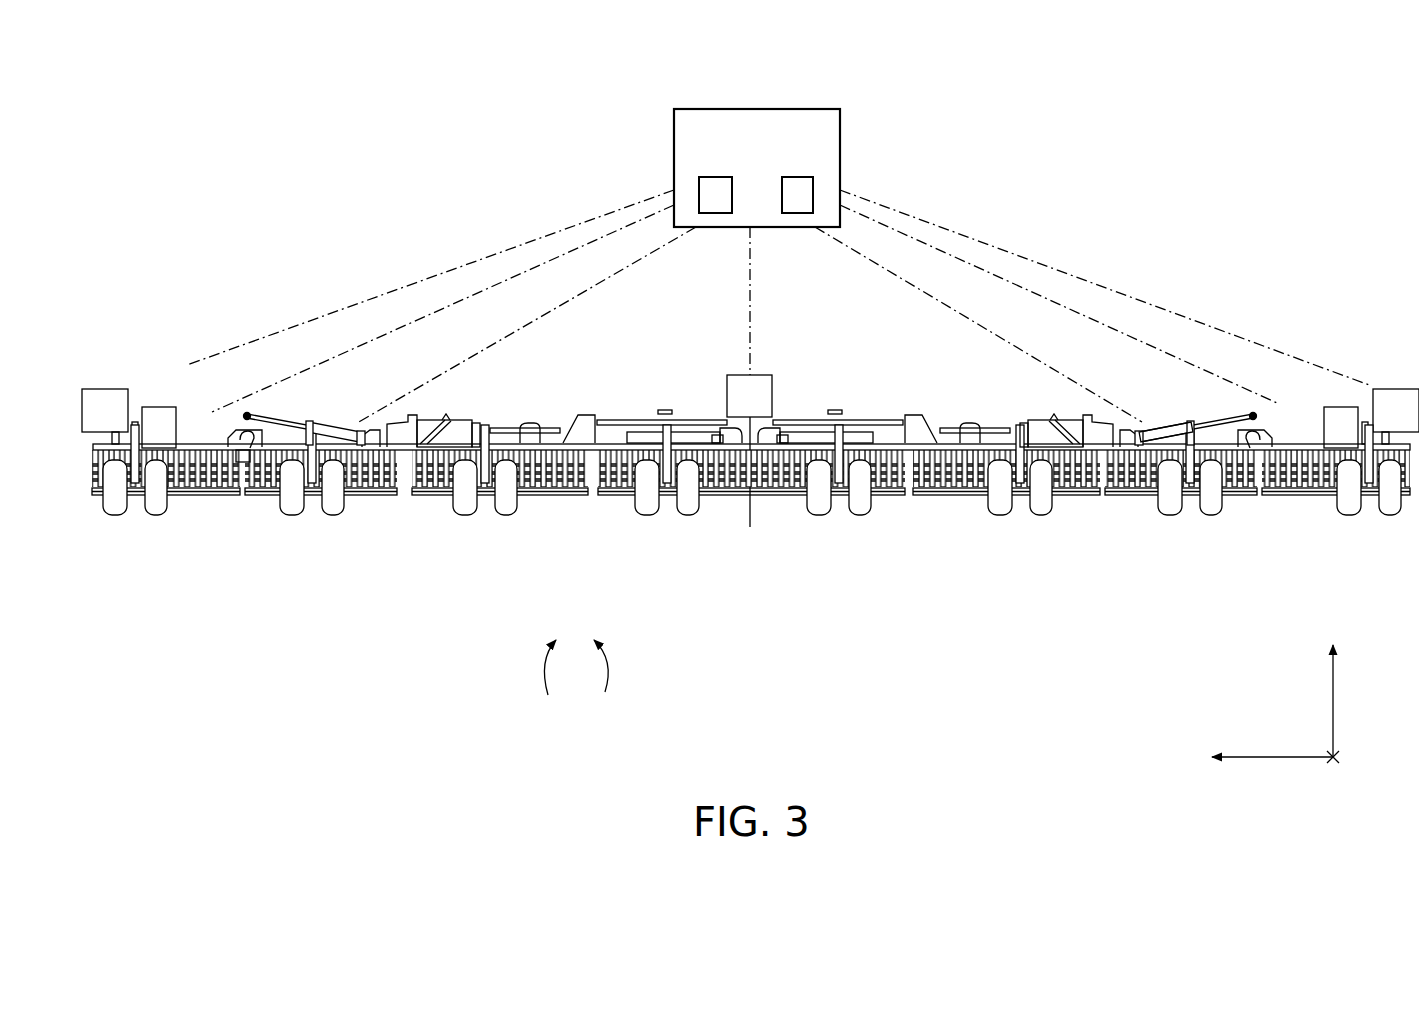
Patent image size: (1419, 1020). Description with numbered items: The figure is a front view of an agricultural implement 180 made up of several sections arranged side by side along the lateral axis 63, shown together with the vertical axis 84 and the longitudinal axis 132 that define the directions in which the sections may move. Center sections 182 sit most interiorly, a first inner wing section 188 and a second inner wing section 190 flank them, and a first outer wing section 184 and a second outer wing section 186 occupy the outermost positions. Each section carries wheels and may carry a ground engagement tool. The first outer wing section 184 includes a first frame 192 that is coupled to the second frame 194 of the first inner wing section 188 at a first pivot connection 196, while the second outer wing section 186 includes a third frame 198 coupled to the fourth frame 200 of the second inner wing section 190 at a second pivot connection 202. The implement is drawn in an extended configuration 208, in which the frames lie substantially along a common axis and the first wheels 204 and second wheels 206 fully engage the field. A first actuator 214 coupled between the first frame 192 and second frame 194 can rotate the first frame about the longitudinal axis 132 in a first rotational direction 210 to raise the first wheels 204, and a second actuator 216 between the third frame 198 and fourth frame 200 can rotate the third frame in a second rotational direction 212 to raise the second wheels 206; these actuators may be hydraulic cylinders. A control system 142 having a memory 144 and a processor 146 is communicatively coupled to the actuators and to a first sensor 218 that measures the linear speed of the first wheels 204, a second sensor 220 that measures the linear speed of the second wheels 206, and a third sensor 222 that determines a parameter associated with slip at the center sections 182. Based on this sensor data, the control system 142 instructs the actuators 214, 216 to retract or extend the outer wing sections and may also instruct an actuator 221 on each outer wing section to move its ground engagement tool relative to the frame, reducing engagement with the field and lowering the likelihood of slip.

The lateral axis 63 is at (1291, 757).
The vertical axis 84 is at (1332, 680).
The longitudinal axis 132 is at (1357, 746).
The control system 142 is at (674, 140).
The memory 144 is at (699, 192).
The processor 146 is at (813, 192).
The agricultural implement 180 is at (970, 168).
The center sections 182 is at (808, 548).
The first outer wing section 184 is at (182, 502).
The second outer wing section 186 is at (1320, 502).
The first inner wing section 188 is at (363, 502).
The second inner wing section 190 is at (1137, 502).
The first frame 192 is at (224, 454).
The second frame 194 is at (270, 444).
The first pivot connection 196 is at (260, 431).
The third frame 198 is at (1283, 441).
The fourth frame 200 is at (1197, 425).
The second pivot connection 202 is at (1230, 428).
The first wheels 204 is at (140, 508).
The second wheels 206 is at (1380, 508).
The extended configuration 208 is at (1148, 326).
The first rotational direction 210 is at (538, 668).
The second rotational direction 212 is at (614, 668).
The first actuator 214 is at (305, 420).
The second actuator 216 is at (1213, 420).
The first sensor 218 is at (125, 389).
The second sensor 220 is at (1390, 389).
The actuator 221 is at (176, 392).
The third sensor 222 is at (727, 396).